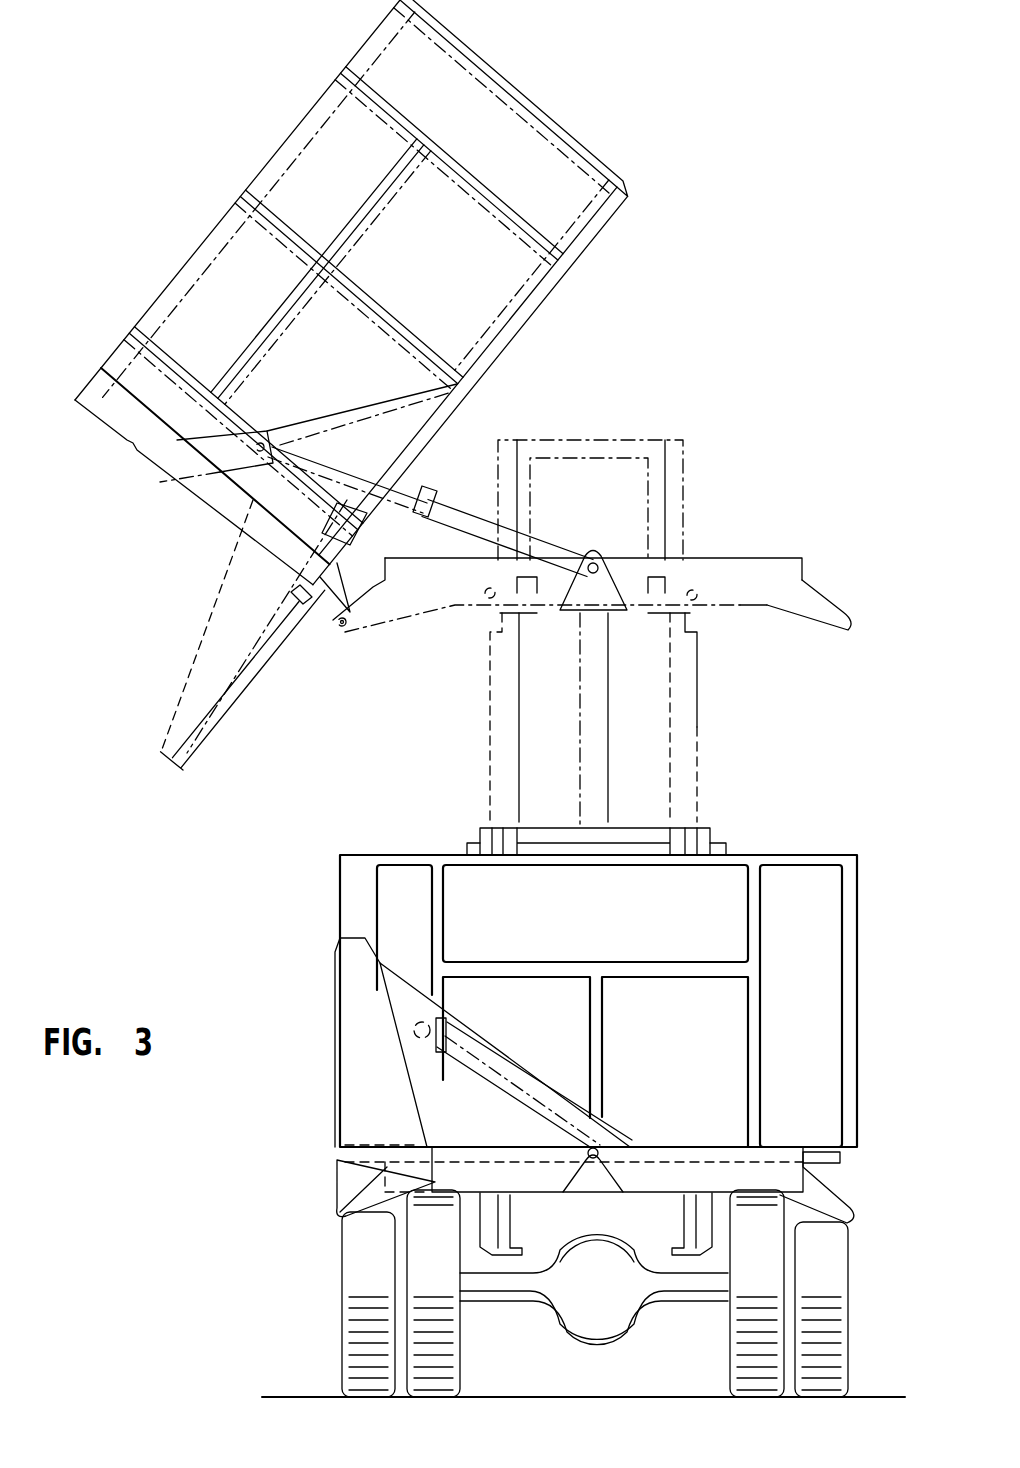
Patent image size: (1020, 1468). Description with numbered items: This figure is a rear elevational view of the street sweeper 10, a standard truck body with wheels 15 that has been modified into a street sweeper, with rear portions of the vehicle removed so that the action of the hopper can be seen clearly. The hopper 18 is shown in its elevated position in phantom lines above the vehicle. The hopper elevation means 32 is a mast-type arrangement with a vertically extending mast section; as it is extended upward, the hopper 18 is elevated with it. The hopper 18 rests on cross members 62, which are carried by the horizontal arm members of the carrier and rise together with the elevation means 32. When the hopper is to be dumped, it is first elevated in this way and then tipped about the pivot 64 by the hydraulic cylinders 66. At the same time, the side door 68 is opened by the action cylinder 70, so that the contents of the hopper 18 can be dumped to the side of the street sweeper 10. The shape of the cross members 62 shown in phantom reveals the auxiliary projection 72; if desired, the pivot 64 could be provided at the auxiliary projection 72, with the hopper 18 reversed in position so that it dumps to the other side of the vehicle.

The street sweeper 10 is at (812, 852).
The wheels 15 is at (833, 1260).
The hopper 18 is at (273, 146).
The hopper elevation means 32 is at (697, 703).
The cross members 62 is at (737, 567).
The pivot 64 is at (343, 628).
The hydraulic cylinders 66 is at (440, 490).
The side door 68 is at (237, 707).
The action cylinder 70 is at (347, 540).
The auxiliary projection 72 is at (828, 598).